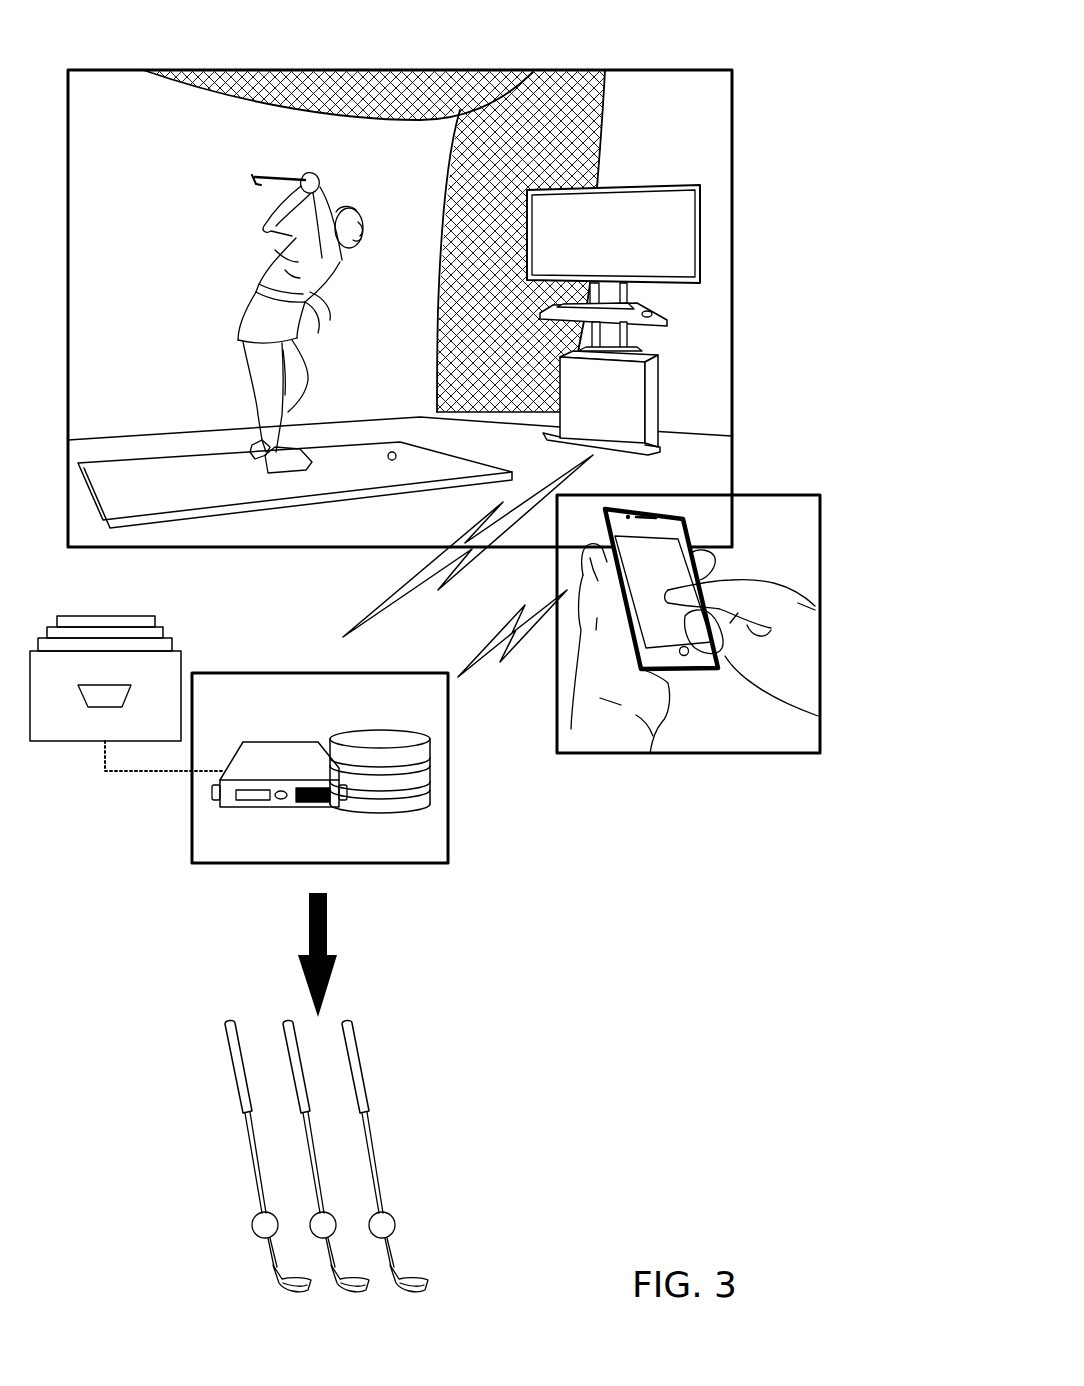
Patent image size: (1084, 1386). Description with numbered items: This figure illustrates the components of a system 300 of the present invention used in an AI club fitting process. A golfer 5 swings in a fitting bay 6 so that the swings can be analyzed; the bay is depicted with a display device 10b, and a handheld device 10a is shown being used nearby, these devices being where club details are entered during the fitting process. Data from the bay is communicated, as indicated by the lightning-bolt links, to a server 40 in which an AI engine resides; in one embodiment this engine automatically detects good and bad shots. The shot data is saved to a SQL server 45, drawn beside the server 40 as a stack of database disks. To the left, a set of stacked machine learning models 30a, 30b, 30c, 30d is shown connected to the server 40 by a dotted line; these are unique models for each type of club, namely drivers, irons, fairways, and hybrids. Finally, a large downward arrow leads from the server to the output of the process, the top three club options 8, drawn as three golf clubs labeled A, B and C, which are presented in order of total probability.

The system 300 is at (895, 95).
The fitting bay 6 is at (126, 108).
The golfer 5 is at (304, 291).
The device 10b is at (699, 311).
The device 10a is at (690, 546).
The machine learning model 30a is at (182, 663).
The machine learning model 30b is at (170, 640).
The machine learning model 30c is at (160, 626).
The machine learning model 30d is at (147, 615).
The server 40 is at (275, 742).
The SQL server 45 is at (360, 729).
The club options 8 is at (412, 1065).